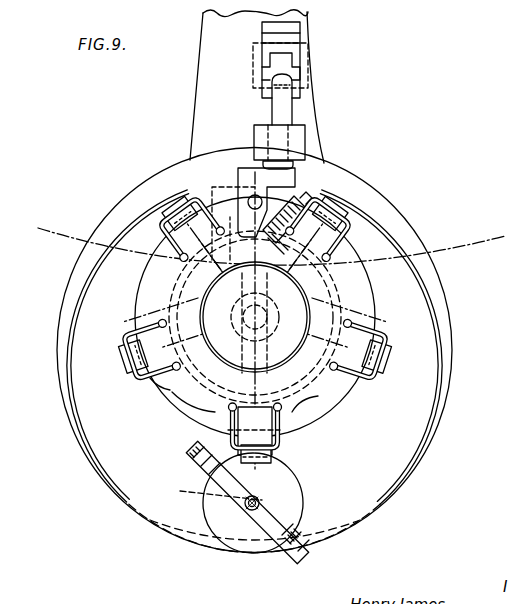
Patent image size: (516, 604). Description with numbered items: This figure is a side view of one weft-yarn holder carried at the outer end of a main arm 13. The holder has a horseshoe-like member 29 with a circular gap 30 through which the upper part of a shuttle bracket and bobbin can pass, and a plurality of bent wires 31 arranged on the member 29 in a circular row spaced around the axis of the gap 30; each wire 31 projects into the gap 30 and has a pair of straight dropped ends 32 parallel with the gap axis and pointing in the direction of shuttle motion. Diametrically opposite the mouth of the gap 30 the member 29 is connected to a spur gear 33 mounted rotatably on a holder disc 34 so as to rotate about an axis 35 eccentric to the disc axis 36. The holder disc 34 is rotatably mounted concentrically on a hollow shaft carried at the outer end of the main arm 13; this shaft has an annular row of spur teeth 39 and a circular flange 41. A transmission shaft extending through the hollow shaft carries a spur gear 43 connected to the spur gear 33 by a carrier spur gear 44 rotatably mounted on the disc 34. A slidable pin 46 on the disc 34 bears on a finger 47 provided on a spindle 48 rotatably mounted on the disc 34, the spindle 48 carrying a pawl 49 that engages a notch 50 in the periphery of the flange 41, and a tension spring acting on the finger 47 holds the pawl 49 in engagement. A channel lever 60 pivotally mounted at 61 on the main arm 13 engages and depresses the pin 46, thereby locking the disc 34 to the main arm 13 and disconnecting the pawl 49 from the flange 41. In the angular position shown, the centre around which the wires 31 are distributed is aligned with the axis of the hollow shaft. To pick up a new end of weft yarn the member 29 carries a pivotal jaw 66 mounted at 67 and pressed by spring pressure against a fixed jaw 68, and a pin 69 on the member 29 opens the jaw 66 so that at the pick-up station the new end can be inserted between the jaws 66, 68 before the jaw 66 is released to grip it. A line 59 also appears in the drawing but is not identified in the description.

The main arm 13 is at (213, 106).
The horseshoe-like member 29 is at (100, 427).
The circular gap 30 is at (170, 388).
The bent wires 31 is at (368, 327).
The dropped ends 32 is at (375, 293).
The spur gear 33 is at (303, 497).
The holder disc 34 is at (74, 283).
The axis 35 is at (202, 512).
The disc axis 36 is at (256, 318).
The annular row of spur teeth 39 is at (342, 272).
The circular flange 41 is at (180, 410).
The spur gear 43 is at (308, 412).
The carrier spur gear 44 is at (228, 433).
The slidable pin 46 is at (282, 110).
The finger 47 is at (270, 186).
The spindle 48 is at (309, 203).
The pawl 49 is at (222, 195).
The notch 50 is at (150, 291).
The axis line 59 is at (60, 233).
The channel lever 60 is at (293, 53).
The pivot 61 is at (252, 62).
The pivotal jaw 66 is at (252, 511).
The jaw mounting 67 is at (195, 452).
The fixed jaw 68 is at (297, 560).
The pin 69 is at (190, 492).